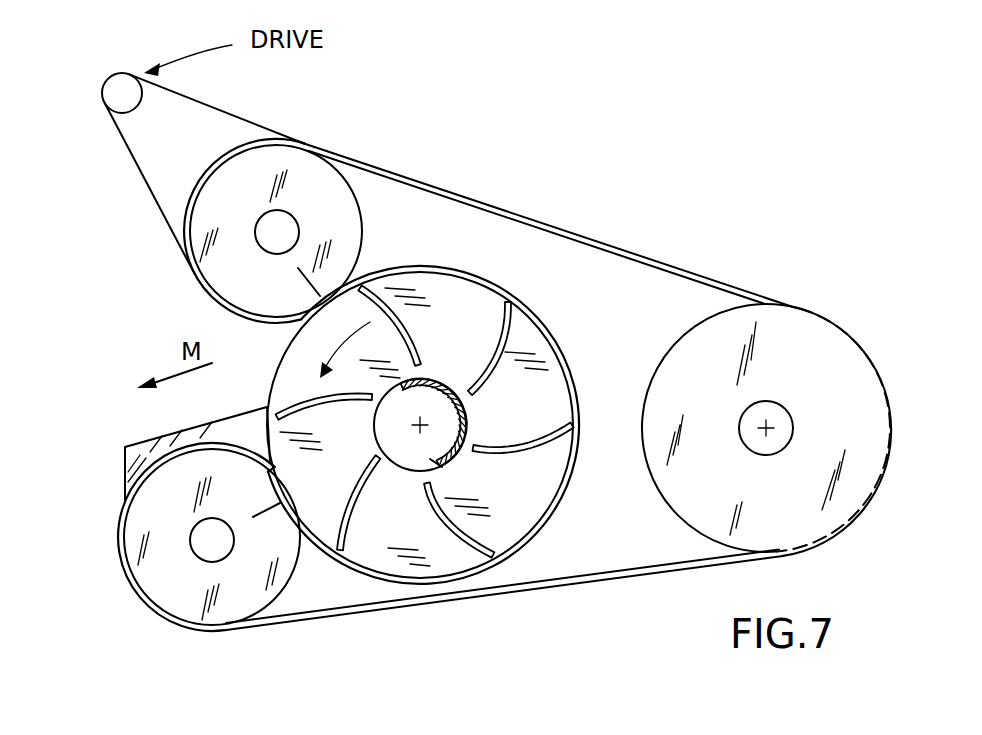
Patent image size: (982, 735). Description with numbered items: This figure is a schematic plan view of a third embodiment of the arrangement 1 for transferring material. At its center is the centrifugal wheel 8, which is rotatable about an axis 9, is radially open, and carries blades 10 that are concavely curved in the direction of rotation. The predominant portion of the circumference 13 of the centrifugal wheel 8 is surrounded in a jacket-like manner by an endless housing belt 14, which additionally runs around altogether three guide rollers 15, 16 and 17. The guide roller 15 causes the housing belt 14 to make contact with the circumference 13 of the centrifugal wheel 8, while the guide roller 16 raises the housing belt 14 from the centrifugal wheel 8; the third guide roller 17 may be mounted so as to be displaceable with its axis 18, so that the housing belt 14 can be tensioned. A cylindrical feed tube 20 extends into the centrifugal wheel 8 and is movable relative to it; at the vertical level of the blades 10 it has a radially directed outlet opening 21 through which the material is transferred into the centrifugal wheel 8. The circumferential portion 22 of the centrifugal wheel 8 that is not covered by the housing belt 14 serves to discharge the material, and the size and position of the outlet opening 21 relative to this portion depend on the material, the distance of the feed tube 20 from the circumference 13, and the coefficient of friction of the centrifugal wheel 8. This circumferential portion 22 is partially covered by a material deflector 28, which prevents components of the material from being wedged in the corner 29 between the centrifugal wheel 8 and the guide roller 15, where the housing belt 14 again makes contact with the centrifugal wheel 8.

The arrangement 1 is at (529, 216).
The centrifugal wheel 8 is at (568, 339).
The axis 9 is at (430, 414).
The blades 10 is at (545, 453).
The circumference 13 is at (522, 547).
The housing belt 14 is at (662, 574).
The guide roller 15 is at (158, 587).
The guide roller 16 is at (307, 168).
The third guide roller 17 is at (808, 335).
The axis 18 is at (767, 432).
The feed tube 20 is at (480, 405).
The outlet opening 21 is at (433, 462).
The circumferential portion 22 is at (250, 492).
The material deflector 28 is at (125, 468).
The corner 29 is at (369, 552).